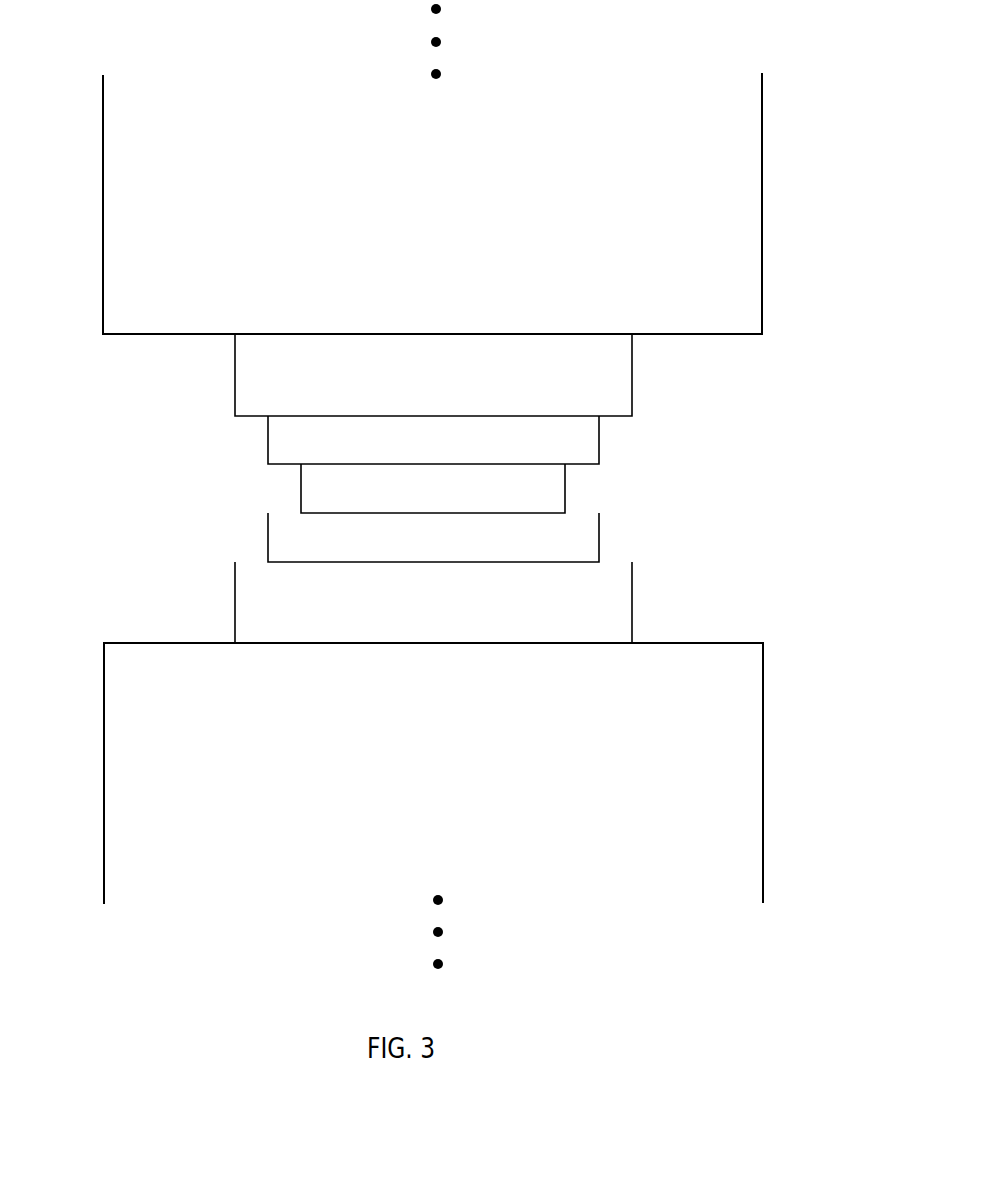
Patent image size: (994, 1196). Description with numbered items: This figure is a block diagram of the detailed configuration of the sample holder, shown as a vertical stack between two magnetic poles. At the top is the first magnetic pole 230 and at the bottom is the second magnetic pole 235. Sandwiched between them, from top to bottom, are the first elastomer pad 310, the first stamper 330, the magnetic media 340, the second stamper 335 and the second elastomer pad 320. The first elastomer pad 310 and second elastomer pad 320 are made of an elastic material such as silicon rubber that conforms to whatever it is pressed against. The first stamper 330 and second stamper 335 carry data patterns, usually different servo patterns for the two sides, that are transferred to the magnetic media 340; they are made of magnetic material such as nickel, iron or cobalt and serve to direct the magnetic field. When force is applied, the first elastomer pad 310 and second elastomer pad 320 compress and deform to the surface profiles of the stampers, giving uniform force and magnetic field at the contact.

The first magnetic pole 230 is at (762, 235).
The second magnetic pole 235 is at (763, 690).
The first elastomer pad 310 is at (632, 379).
The first stamper 330 is at (599, 445).
The magnetic media 340 is at (565, 494).
The second stamper 335 is at (599, 542).
The second elastomer pad 320 is at (632, 609).